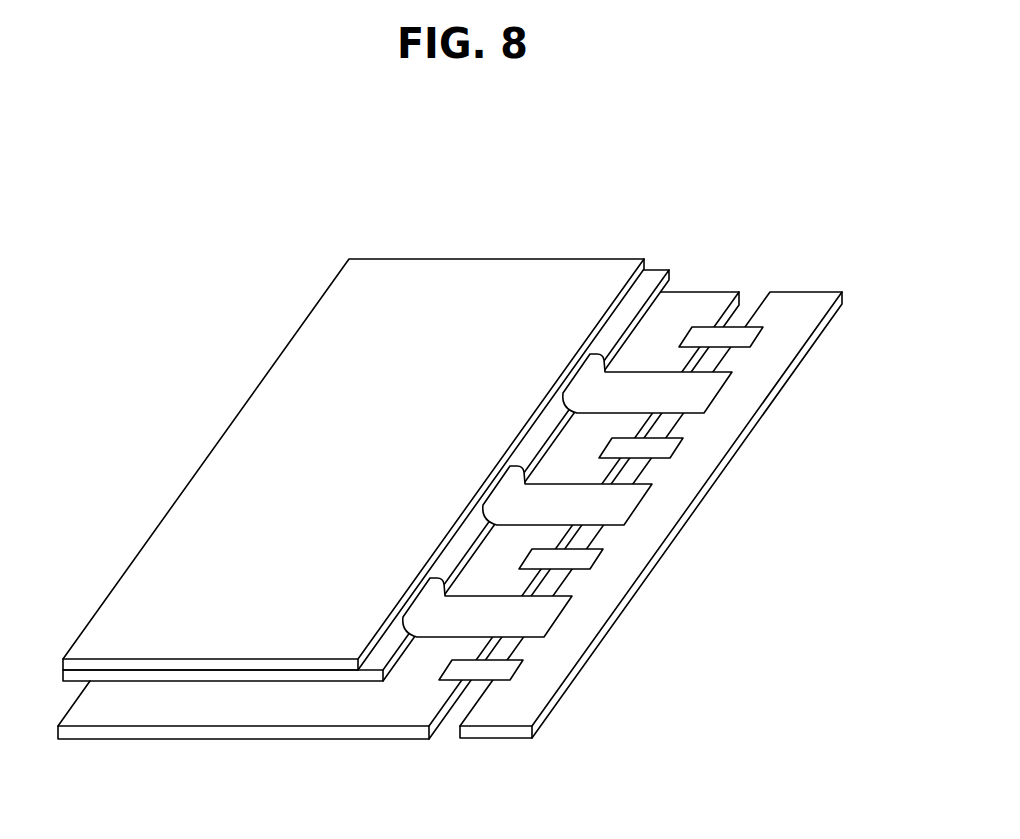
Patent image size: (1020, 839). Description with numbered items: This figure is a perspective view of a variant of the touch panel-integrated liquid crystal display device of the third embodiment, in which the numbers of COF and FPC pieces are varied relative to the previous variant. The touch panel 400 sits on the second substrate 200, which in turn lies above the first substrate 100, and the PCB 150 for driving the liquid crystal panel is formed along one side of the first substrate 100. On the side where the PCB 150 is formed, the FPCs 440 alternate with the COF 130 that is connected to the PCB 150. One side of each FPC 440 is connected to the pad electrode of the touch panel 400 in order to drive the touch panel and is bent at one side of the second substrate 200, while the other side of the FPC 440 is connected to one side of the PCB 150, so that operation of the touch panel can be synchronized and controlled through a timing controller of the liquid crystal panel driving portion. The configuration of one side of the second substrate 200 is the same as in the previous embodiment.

The first substrate 100 is at (312, 708).
The PCB 150 is at (693, 478).
The second substrate 200 is at (657, 272).
The touch panel 400 is at (493, 275).
The COF 130 is at (752, 336).
The FPC 440 is at (707, 392).